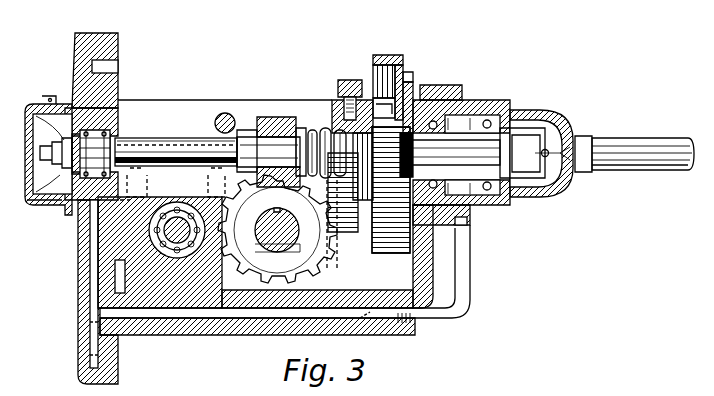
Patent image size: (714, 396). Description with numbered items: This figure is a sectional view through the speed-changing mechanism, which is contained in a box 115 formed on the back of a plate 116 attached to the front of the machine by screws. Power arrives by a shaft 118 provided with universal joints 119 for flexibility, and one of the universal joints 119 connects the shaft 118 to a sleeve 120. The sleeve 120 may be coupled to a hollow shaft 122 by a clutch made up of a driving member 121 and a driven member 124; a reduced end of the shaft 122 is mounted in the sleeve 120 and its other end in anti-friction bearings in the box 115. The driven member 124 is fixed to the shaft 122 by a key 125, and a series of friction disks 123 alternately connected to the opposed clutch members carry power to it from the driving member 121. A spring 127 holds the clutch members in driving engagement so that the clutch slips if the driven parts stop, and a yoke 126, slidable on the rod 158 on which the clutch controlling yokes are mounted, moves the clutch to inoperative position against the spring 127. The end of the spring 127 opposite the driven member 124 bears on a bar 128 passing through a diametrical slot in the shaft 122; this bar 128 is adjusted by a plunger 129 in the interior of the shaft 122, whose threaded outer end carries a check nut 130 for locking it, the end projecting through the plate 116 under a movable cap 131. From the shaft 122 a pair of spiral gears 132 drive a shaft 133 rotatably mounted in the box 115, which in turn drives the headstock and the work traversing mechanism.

The box 115 is at (383, 328).
The plate 116 is at (80, 295).
The shaft 118 is at (632, 150).
The universal joints 119 is at (553, 182).
The sleeve 120 is at (475, 132).
The driving member 121 is at (383, 98).
The shaft 122 is at (168, 140).
The friction disks 123 is at (382, 83).
The driven member 124 is at (334, 100).
The key 125 is at (407, 72).
The yoke 126 is at (348, 78).
The spring 127 is at (322, 132).
The bar 128 is at (298, 125).
The plunger 129 is at (253, 153).
The check nut 130 is at (45, 103).
The movable cap 131 is at (35, 200).
The spiral gears 132 is at (265, 242).
The shaft 133 is at (263, 258).
The rod 158 is at (222, 113).